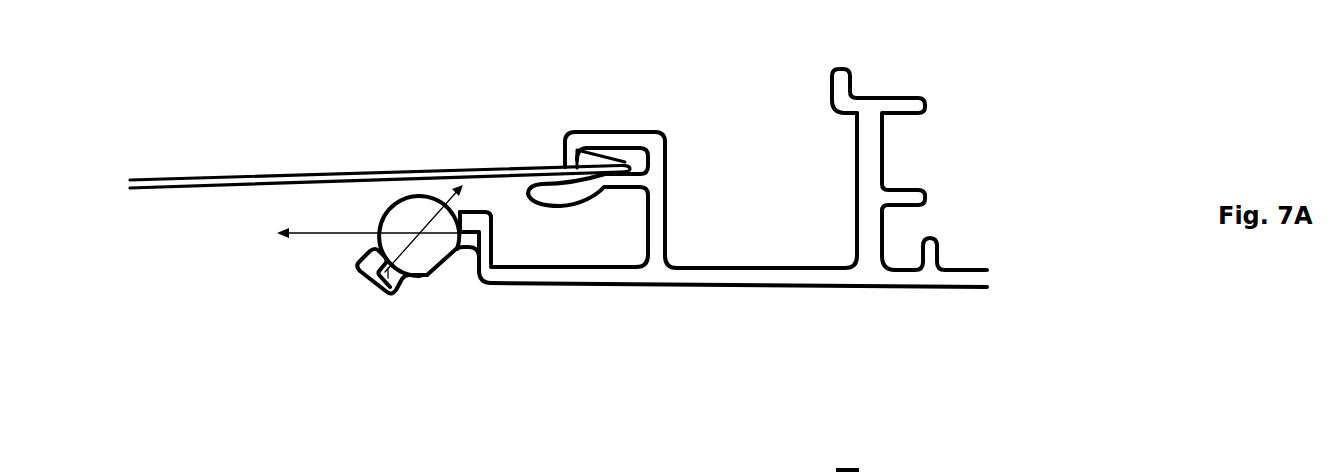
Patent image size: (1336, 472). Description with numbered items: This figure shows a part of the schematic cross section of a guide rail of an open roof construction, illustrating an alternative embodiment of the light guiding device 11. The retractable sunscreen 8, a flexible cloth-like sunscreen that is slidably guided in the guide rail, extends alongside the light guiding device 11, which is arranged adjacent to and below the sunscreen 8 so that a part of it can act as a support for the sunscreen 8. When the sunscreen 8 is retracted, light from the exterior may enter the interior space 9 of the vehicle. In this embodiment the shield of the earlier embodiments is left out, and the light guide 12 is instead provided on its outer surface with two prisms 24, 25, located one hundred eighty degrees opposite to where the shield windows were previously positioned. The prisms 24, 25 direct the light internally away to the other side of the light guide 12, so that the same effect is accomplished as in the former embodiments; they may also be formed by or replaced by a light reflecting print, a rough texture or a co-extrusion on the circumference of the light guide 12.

The sunscreen 8 is at (169, 187).
The interior space 9 is at (195, 341).
The light guiding device 11 is at (503, 254).
The light guide 12 is at (422, 255).
The prism 24 is at (474, 240).
The prism 25 is at (392, 293).